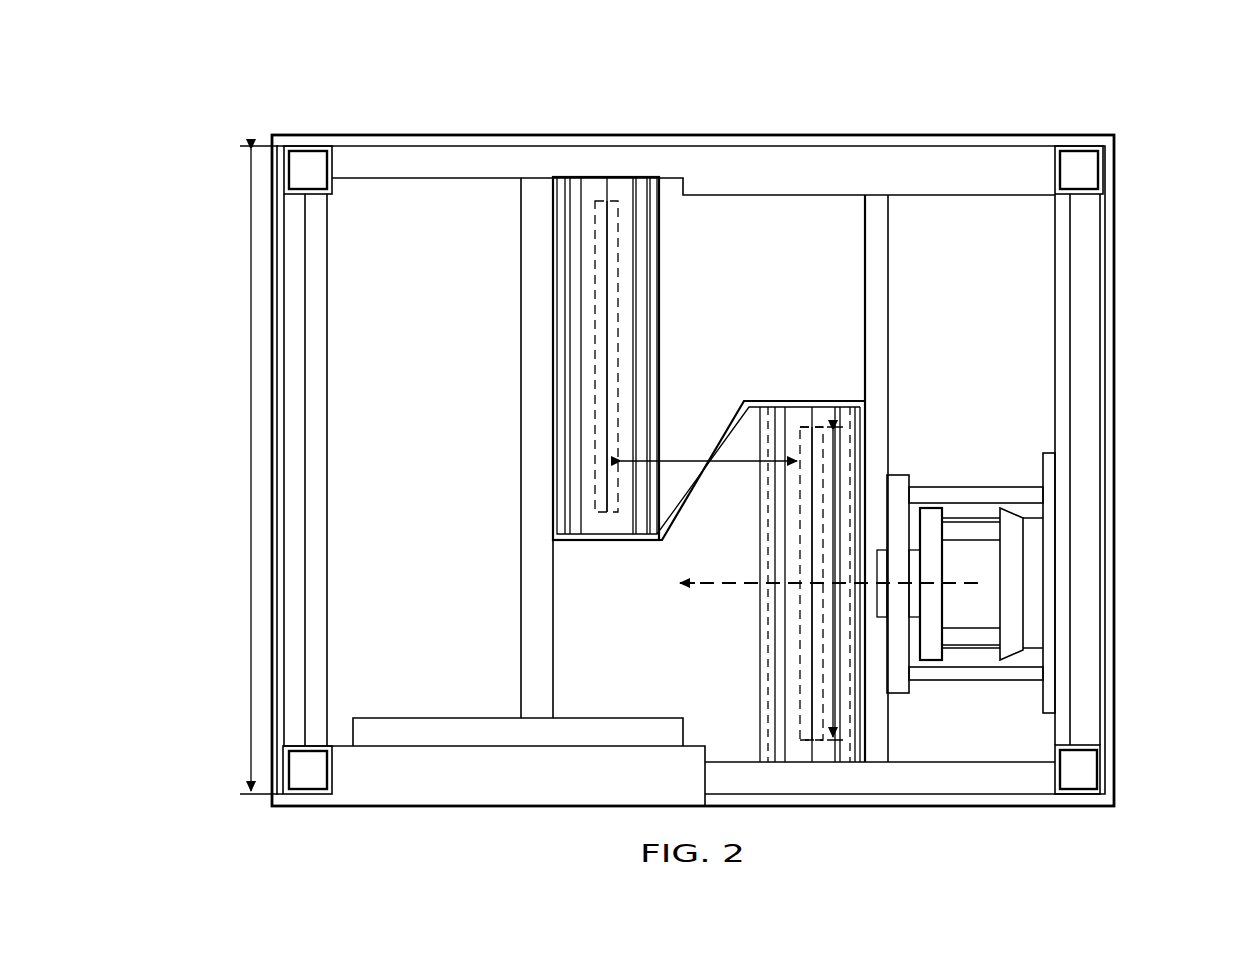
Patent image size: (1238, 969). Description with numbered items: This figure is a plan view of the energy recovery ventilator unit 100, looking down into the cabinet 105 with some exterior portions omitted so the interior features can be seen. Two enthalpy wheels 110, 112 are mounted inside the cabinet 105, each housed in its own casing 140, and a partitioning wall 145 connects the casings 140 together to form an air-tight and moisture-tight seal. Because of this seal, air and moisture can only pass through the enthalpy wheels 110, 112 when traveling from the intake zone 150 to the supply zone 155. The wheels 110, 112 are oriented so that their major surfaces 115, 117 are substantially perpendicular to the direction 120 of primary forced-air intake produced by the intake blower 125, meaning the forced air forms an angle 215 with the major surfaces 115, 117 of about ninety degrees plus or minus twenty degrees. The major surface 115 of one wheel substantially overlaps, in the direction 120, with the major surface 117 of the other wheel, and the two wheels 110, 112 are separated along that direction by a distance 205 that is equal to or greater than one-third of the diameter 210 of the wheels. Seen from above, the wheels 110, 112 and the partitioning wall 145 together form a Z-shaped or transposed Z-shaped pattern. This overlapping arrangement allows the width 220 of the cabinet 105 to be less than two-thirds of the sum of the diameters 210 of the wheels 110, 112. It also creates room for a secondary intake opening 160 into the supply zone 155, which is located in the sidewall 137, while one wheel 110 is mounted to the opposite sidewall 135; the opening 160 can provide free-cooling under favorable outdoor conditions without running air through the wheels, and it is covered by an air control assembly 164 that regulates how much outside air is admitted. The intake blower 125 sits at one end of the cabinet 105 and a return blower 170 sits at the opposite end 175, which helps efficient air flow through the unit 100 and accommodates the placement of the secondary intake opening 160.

The energy recovery ventilator unit 100 is at (1185, 98).
The cabinet 105 is at (1034, 130).
The enthalpy wheel 110 is at (600, 516).
The enthalpy wheel 112 is at (821, 423).
The major surface 115 is at (595, 307).
The major surface 117 is at (823, 462).
The direction of primary forced-air intake 120 is at (720, 590).
The intake blower 125 is at (1010, 640).
The sidewall 135 is at (366, 120).
The sidewall 137 is at (1051, 819).
The casing 140 is at (567, 418).
The partitioning wall 145 is at (735, 406).
The intake zone 150 is at (994, 334).
The supply zone 155 is at (451, 592).
The secondary intake opening 160 is at (520, 810).
The air control assembly 164 is at (400, 778).
The return blower 170 is at (1140, 686).
The opposite end 175 is at (216, 299).
The distance 205 is at (683, 460).
The diameter 210 is at (838, 700).
The angle 215 is at (797, 525).
The width 220 is at (250, 468).